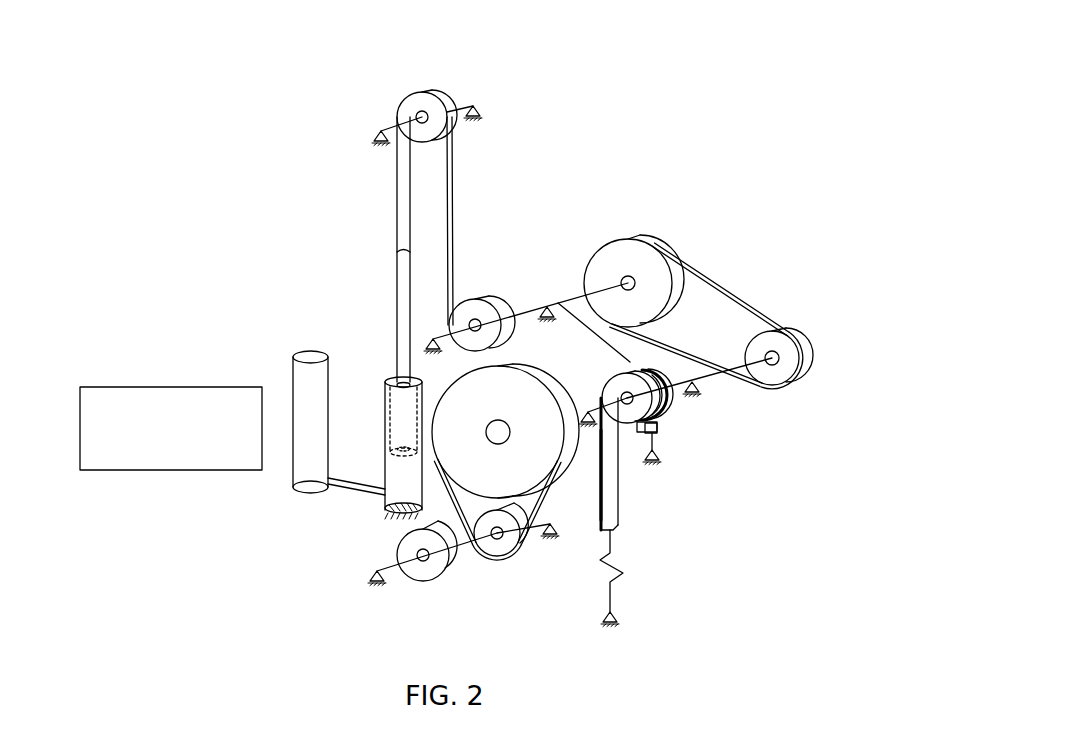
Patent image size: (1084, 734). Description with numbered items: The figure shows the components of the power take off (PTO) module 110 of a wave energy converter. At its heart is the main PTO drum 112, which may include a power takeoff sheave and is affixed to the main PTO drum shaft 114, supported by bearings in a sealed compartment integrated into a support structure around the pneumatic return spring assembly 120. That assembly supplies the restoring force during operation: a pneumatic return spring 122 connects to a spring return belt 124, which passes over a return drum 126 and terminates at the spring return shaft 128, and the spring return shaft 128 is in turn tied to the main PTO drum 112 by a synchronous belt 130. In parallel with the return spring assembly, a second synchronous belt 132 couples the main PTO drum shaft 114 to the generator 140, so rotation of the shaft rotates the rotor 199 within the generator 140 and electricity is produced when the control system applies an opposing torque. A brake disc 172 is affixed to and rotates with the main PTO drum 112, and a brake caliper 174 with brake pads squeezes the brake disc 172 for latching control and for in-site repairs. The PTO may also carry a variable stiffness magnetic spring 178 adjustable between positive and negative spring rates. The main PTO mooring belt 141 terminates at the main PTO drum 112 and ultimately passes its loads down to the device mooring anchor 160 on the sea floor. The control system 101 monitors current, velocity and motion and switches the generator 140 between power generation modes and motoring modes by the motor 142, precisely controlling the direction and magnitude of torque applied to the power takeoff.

The control system 101 is at (171, 428).
The power take off module 110 is at (352, 330).
The main PTO drum 112 is at (663, 417).
The main PTO drum shaft 114 is at (717, 363).
The pneumatic return spring assembly 120 is at (523, 248).
The pneumatic return spring 122 is at (400, 88).
The spring return belt 124 is at (442, 205).
The return drum 126 is at (465, 305).
The spring return shaft 128 is at (568, 287).
The synchronous belt 130 is at (597, 323).
The second synchronous belt 132 is at (737, 263).
The generator 140 is at (633, 530).
The main PTO mooring belt 141 is at (588, 477).
The motor 142 is at (487, 443).
The device mooring anchor 160 is at (629, 617).
The brake disc 172 is at (675, 403).
The brake caliper 174 is at (662, 433).
The variable stiffness magnetic spring 178 is at (378, 380).
The rotor 199 is at (527, 477).